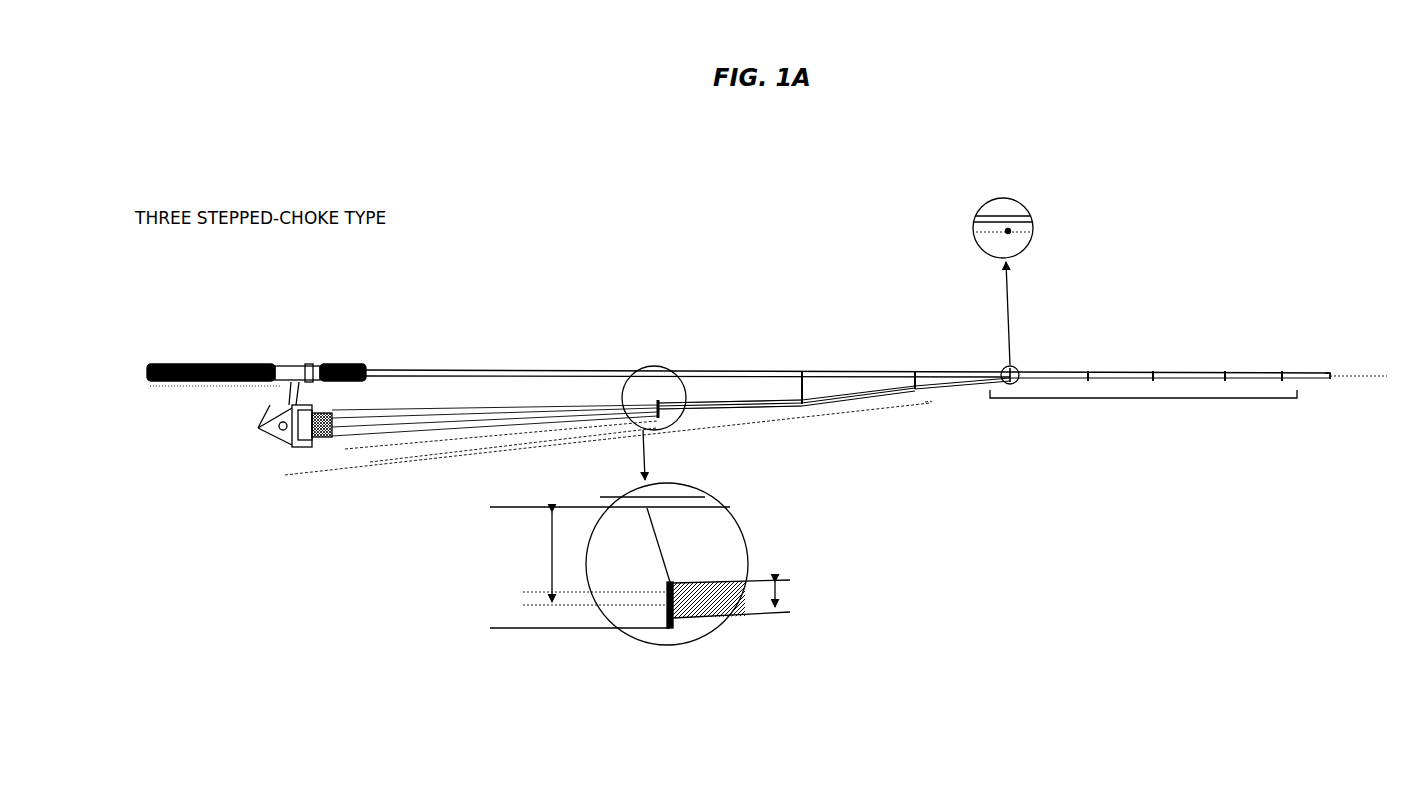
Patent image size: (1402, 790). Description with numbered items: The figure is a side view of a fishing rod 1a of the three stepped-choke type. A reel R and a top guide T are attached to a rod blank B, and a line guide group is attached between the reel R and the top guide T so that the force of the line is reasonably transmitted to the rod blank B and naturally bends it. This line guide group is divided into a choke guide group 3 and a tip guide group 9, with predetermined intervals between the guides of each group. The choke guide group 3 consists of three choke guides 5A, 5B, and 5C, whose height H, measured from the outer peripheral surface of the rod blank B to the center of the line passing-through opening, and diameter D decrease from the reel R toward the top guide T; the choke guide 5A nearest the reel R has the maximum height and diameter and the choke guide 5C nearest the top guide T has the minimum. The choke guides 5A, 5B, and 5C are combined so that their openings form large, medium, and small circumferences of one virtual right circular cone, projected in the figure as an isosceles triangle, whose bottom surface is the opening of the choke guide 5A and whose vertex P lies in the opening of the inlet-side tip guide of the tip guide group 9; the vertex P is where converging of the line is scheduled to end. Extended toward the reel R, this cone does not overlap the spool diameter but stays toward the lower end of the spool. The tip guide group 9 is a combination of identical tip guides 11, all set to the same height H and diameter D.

The fishing rod 1a is at (190, 352).
The rod blank B is at (412, 364).
The reel R is at (276, 440).
The choke guide 5A is at (658, 402).
The choke guide 5B is at (802, 386).
The choke guide 5C is at (915, 372).
The choke guide group 3 is at (653, 432).
The tip guide 11 is at (1088, 371).
The top (vertex) of the virtual cone shape P is at (1028, 210).
The tip guide group 9 is at (1132, 398).
The top guide T is at (1330, 378).
The height H is at (537, 557).
The diameter D is at (791, 594).